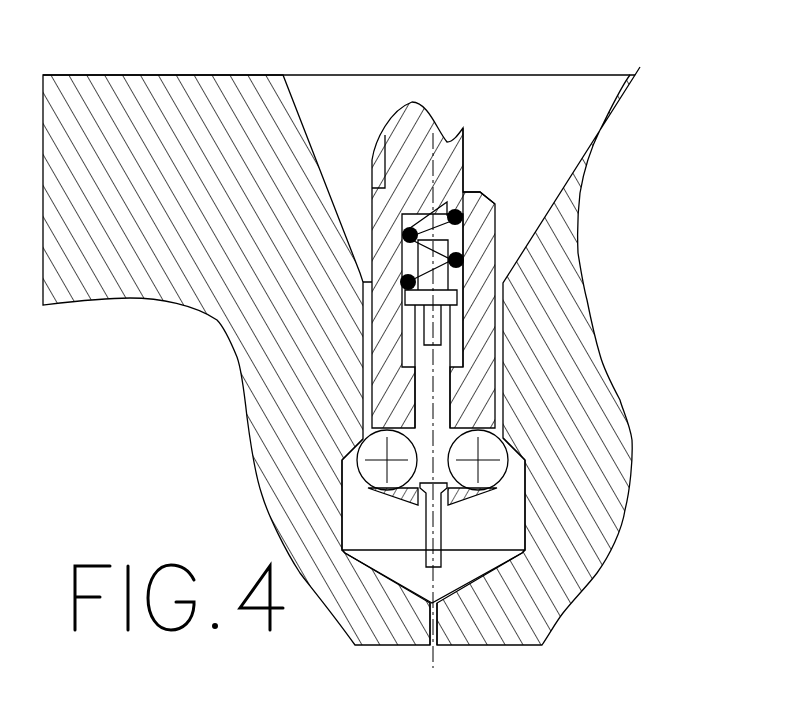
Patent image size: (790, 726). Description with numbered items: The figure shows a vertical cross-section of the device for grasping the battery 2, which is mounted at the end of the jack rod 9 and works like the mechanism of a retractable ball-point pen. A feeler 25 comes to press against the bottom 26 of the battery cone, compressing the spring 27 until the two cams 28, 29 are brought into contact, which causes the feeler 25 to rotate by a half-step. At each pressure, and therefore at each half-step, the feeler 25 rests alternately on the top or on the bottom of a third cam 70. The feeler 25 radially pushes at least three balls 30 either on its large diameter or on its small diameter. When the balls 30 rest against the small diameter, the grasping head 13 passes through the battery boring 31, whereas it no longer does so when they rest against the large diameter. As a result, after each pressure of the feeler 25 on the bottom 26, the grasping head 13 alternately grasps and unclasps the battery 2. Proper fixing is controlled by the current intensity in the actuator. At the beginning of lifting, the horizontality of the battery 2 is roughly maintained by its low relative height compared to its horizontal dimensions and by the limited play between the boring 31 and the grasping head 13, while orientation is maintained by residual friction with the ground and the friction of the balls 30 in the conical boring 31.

The battery 2 is at (510, 627).
The jack rod 9 is at (427, 152).
The grasping head 13 is at (487, 383).
The feeler 25 is at (433, 520).
The bottom of the battery cone 26 is at (497, 593).
The spring 27 is at (457, 268).
The cam 28 is at (440, 240).
The cam 29 is at (455, 205).
The balls 30 is at (470, 467).
The battery boring 31 is at (497, 400).
The third cam 70 is at (433, 325).